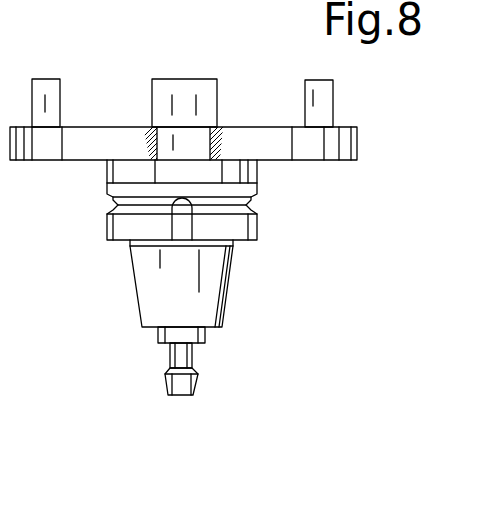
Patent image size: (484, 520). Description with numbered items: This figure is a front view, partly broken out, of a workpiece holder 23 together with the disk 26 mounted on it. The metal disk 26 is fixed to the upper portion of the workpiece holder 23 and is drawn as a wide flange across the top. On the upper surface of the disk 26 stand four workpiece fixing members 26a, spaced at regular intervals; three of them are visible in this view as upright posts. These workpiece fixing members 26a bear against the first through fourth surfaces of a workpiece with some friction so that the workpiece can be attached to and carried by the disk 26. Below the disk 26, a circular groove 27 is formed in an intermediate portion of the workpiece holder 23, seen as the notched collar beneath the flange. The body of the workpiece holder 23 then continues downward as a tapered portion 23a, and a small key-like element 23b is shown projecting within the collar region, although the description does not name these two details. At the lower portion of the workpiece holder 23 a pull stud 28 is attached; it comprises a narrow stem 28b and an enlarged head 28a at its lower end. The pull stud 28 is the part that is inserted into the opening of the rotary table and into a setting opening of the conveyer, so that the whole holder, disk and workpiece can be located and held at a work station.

The disk 26 is at (359, 146).
The workpiece fixing members 26a is at (332, 102).
The circular groove 27 is at (248, 205).
The workpiece holder 23 is at (188, 243).
The tapered shank of tool holder 23a is at (142, 285).
The drive key 23b is at (189, 226).
The pull stud 28 is at (177, 380).
The head of retention knob 28a is at (190, 394).
The stem of retention knob 28b is at (170, 352).